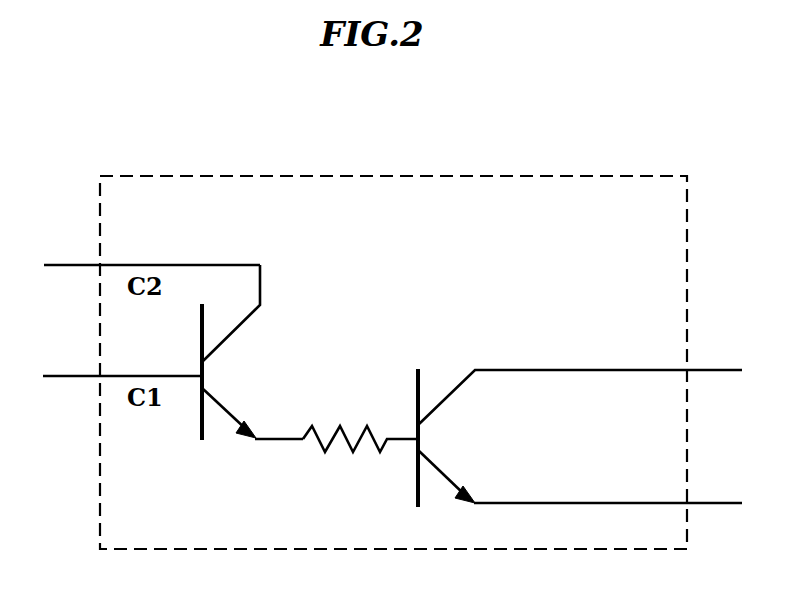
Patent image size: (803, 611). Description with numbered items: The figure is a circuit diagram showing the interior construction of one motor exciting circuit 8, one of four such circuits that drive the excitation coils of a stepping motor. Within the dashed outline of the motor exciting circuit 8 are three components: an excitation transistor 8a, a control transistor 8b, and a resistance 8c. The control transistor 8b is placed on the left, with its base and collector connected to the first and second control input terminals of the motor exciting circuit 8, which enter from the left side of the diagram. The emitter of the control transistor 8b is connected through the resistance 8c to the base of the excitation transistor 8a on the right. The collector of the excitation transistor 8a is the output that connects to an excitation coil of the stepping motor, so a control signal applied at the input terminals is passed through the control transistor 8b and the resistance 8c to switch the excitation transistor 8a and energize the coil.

The motor exciting circuit 8 is at (553, 175).
The excitation transistor 8a is at (423, 408).
The control transistor 8b is at (201, 402).
The resistance 8c is at (318, 442).